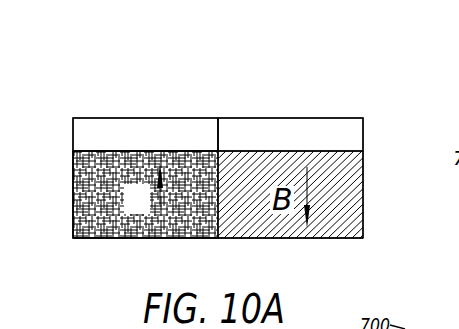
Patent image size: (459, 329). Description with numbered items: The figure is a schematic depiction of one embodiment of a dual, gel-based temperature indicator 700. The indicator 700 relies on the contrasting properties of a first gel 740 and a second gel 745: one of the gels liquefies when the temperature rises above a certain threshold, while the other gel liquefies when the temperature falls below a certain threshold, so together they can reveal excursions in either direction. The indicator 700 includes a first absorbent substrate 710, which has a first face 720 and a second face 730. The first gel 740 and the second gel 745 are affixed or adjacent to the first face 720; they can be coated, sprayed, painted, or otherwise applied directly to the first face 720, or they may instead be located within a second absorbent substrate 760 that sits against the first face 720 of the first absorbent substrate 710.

The dual, gel-based temperature indicator 700 is at (165, 95).
The first absorbent substrate 710 is at (187, 128).
The first face 720 is at (103, 151).
The second face 730 is at (127, 120).
The first gel 740 is at (110, 177).
The second gel 745 is at (327, 200).
The second absorbent substrate 760 is at (72, 215).